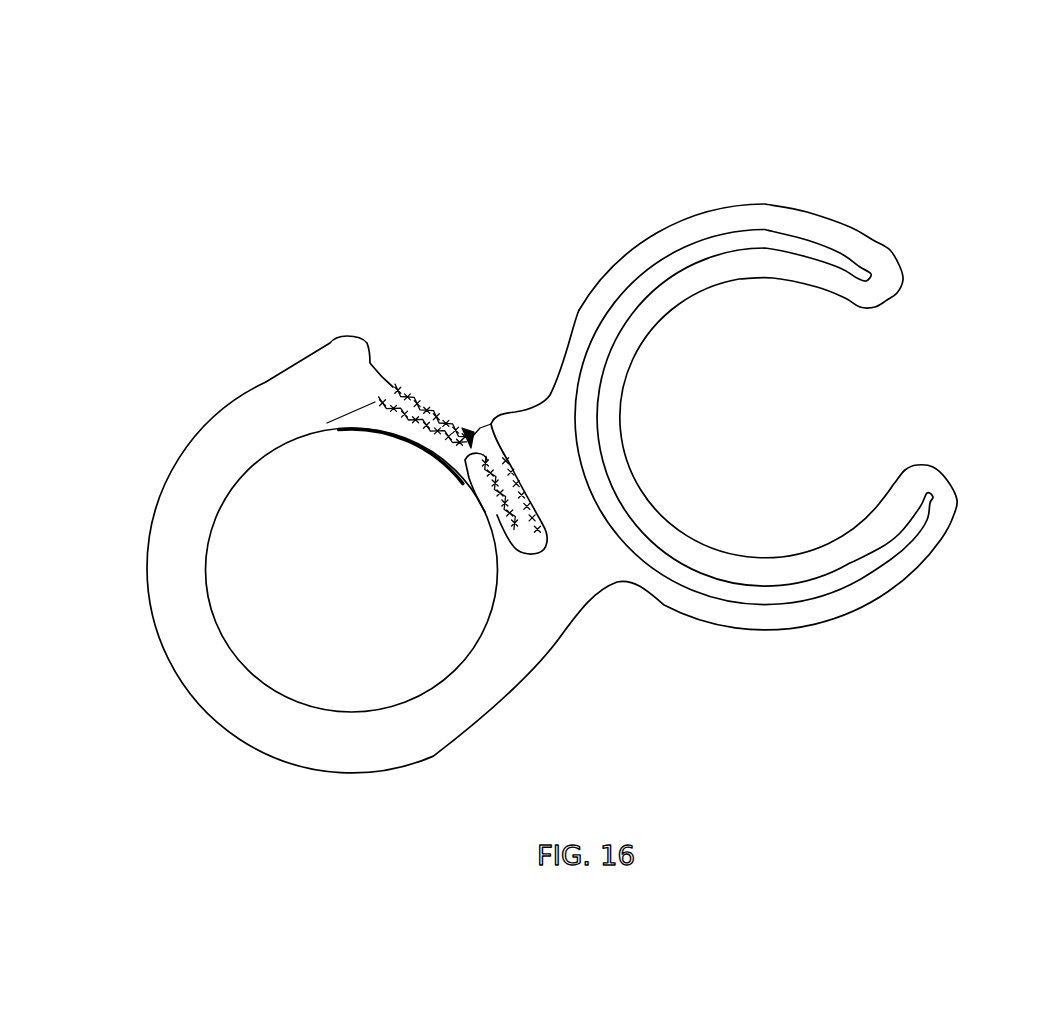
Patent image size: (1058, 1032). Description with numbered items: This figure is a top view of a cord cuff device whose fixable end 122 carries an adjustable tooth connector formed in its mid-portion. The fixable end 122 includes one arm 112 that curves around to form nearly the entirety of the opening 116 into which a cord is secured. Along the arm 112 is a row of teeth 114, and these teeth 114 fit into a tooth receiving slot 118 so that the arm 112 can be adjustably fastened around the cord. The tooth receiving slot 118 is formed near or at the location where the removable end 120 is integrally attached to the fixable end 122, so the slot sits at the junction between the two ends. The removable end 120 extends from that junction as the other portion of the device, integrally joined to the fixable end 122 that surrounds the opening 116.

The arm 112 is at (501, 488).
The teeth 114 is at (425, 407).
The opening 116 is at (372, 582).
The tooth receiving slot 118 is at (475, 413).
The removable end 120 is at (703, 150).
The fixable end 122 is at (501, 400).